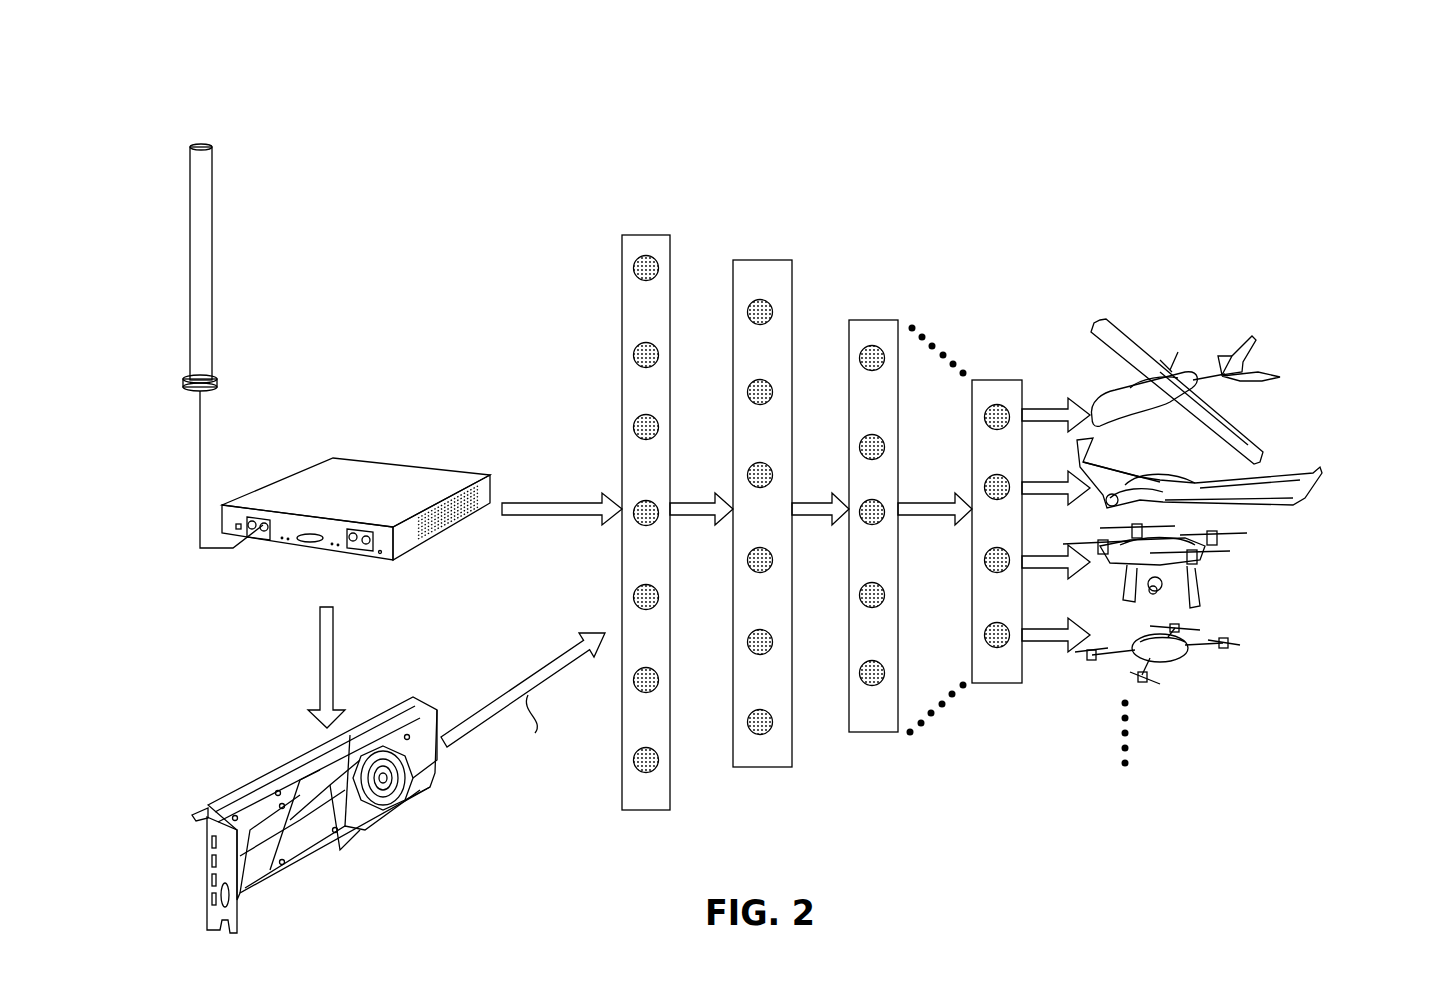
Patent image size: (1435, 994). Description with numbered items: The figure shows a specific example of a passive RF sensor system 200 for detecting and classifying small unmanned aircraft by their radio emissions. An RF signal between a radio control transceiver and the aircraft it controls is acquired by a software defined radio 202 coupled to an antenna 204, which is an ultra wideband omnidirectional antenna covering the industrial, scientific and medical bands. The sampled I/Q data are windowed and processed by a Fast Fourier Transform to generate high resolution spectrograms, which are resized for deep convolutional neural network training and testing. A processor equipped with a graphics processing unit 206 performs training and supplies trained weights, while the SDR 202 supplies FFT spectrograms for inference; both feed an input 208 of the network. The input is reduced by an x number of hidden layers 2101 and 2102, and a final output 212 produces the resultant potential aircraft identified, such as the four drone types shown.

The passive RF sensor system 200 is at (393, 128).
The software defined radio 202 is at (287, 548).
The antenna 204 is at (212, 192).
The graphics processing unit 206 is at (207, 843).
The input 208 is at (660, 233).
The hidden layer 2101 is at (792, 258).
The hidden layer 2102 is at (892, 318).
The final output 212 is at (1010, 380).